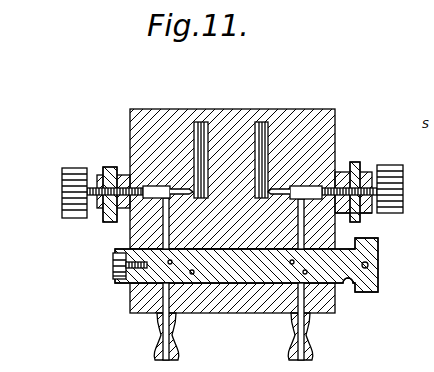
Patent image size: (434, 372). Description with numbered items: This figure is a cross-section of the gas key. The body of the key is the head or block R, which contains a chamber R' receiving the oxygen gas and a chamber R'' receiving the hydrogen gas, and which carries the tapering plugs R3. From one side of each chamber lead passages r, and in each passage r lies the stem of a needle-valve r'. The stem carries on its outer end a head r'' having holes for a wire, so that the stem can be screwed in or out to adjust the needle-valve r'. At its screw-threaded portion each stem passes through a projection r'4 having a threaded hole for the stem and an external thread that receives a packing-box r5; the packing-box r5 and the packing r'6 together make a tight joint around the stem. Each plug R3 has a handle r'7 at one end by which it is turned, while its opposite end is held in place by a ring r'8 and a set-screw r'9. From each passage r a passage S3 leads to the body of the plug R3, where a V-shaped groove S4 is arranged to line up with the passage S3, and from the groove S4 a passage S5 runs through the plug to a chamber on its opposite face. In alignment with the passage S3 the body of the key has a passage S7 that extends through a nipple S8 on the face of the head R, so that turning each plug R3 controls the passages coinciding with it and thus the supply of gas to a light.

The head or block R is at (241, 211).
The chamber R' is at (281, 138).
The chamber R'' is at (204, 137).
The plug R3 is at (261, 265).
The passage r is at (295, 183).
The needle-valve r' is at (232, 164).
The head r'' is at (215, 191).
The projection r'4 is at (225, 183).
The packing-box r5 is at (64, 170).
The packing r'6 is at (361, 224).
The handle r'7 is at (386, 250).
The ring r'8 is at (121, 257).
The set-screw r'9 is at (105, 285).
The passage S3 is at (241, 223).
The V-shaped groove S4 is at (231, 263).
The passage S5 is at (244, 269).
The passage S7 is at (172, 334).
The nipple S8 is at (225, 336).